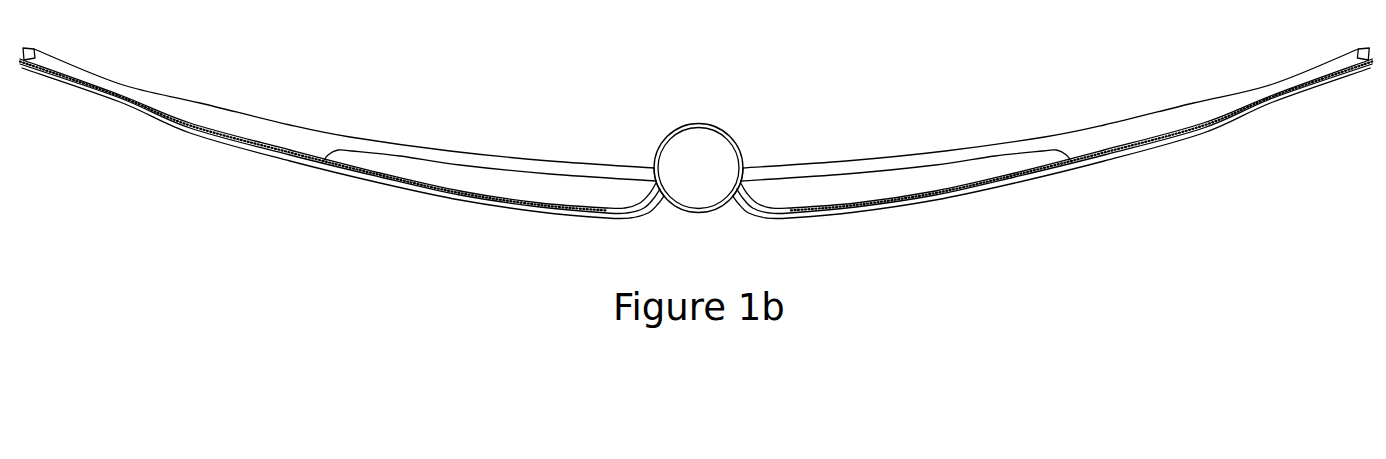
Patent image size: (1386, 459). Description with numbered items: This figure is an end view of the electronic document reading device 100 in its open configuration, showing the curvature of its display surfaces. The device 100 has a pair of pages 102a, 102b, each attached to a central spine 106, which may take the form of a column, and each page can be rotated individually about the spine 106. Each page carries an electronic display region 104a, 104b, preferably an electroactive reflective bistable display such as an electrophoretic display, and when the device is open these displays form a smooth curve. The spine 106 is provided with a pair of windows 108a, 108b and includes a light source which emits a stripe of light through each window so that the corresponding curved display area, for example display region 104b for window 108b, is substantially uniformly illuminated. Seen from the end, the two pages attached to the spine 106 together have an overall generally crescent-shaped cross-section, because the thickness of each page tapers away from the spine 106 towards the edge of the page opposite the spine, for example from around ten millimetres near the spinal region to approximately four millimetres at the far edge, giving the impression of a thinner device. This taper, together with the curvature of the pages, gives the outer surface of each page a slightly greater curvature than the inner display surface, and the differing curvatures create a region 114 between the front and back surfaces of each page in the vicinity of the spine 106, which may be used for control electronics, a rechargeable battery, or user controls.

The electronic document reading device 100 is at (290, 272).
The page 102a is at (226, 172).
The page 102b is at (1224, 156).
The electronic display region 104a is at (285, 114).
The electronic display region 104b is at (1063, 120).
The central spine 106 is at (709, 178).
The window 108a is at (645, 148).
The window 108b is at (751, 146).
The region 114 is at (623, 204).